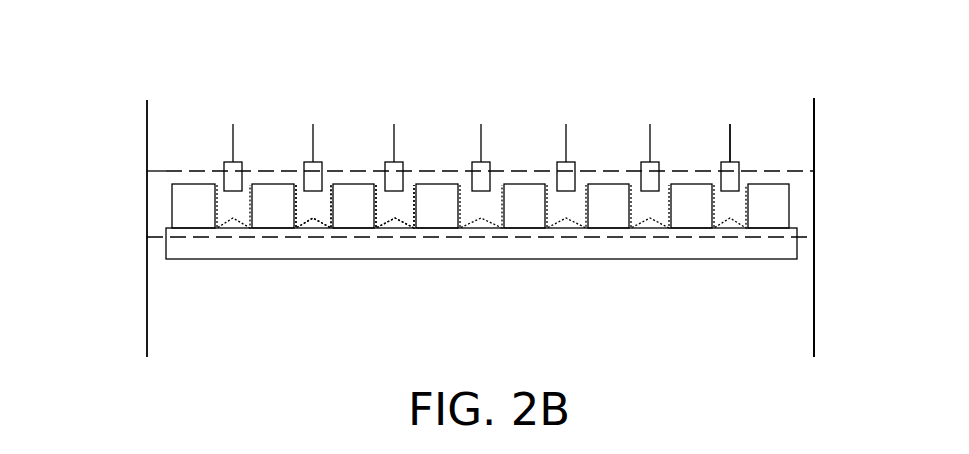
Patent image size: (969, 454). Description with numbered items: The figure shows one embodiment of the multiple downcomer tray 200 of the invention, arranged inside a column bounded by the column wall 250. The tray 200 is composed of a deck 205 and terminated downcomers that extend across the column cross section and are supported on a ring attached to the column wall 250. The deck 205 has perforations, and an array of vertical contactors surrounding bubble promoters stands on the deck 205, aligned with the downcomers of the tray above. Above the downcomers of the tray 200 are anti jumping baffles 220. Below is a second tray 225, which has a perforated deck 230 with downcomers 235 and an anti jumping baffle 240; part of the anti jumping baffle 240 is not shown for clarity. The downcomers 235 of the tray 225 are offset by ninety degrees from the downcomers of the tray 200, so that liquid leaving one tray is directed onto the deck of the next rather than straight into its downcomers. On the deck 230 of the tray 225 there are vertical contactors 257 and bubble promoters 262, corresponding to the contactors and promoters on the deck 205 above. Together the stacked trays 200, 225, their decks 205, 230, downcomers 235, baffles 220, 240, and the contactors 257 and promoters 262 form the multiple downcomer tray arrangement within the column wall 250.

The multiple downcomer tray 200 is at (114, 148).
The deck 205 is at (162, 171).
The anti jumping baffles 220 is at (730, 140).
The tray 225 is at (126, 226).
The perforated deck 230 is at (156, 240).
The downcomers 235 is at (385, 228).
The anti jumping baffle 240 is at (447, 220).
The column wall 250 is at (814, 127).
The vertical contactors 257 is at (325, 215).
The bubble promoters 262 is at (311, 227).